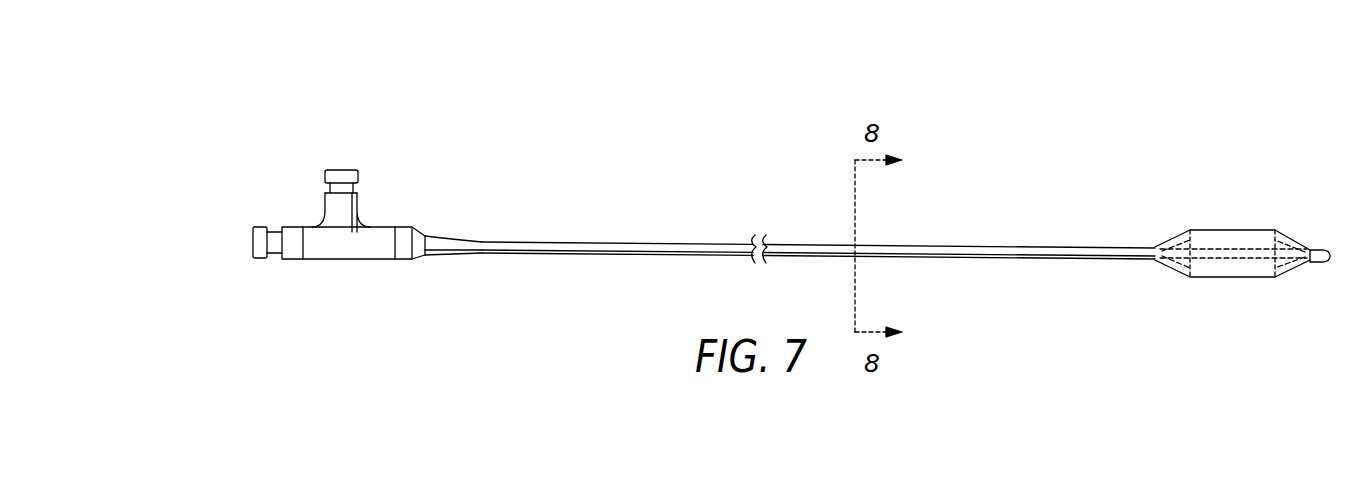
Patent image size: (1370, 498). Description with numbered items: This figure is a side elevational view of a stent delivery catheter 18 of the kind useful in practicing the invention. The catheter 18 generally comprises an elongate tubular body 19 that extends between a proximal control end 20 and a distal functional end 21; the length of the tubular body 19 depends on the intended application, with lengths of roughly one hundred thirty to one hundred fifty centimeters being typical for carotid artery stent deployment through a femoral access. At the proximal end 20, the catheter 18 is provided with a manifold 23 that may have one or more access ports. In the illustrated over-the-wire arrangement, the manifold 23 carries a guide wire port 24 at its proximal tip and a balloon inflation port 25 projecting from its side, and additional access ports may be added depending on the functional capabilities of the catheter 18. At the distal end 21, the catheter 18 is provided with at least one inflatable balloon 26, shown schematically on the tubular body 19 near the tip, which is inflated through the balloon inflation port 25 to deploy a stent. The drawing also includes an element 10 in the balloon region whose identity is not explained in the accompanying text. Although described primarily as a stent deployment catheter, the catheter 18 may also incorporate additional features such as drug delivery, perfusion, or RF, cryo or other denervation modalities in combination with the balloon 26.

The stent delivery catheter 18 is at (1002, 186).
The proximal control end 20 is at (294, 160).
The manifold 23 is at (333, 260).
The guide wire port 24 is at (253, 257).
The balloon inflation port 25 is at (345, 168).
The elongate tubular body 19 is at (593, 242).
The distal functional end 21 is at (1281, 208).
The inflatable balloon 26 is at (1218, 230).
The inner lumen within balloon 10 is at (1212, 278).